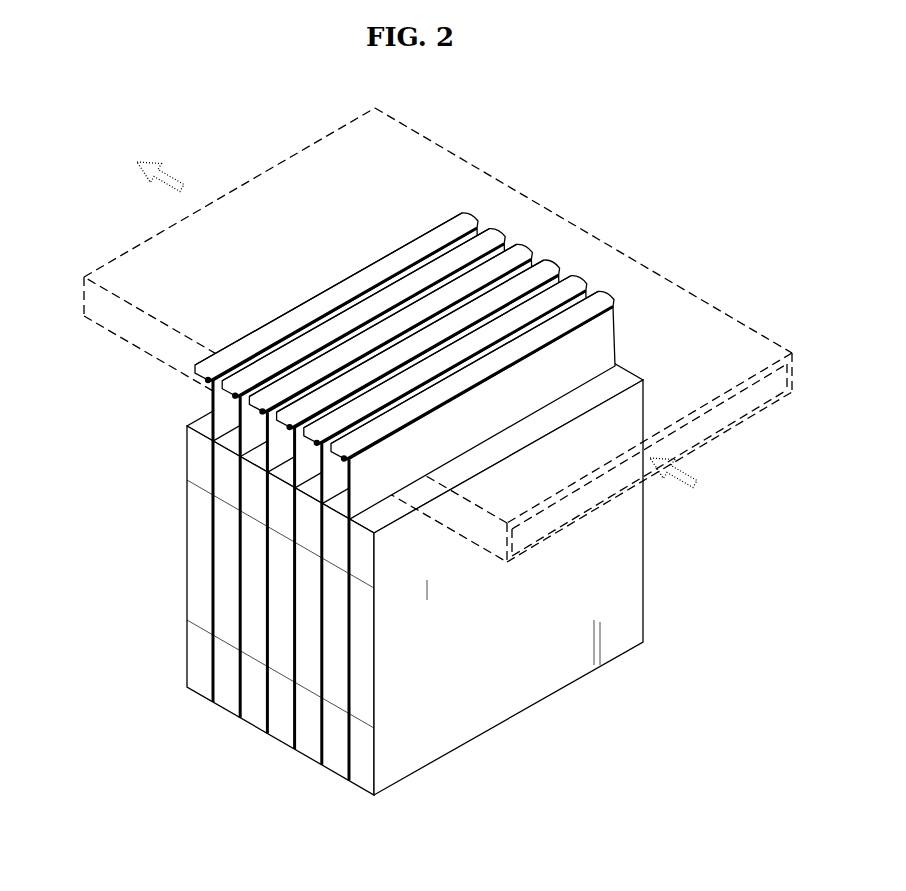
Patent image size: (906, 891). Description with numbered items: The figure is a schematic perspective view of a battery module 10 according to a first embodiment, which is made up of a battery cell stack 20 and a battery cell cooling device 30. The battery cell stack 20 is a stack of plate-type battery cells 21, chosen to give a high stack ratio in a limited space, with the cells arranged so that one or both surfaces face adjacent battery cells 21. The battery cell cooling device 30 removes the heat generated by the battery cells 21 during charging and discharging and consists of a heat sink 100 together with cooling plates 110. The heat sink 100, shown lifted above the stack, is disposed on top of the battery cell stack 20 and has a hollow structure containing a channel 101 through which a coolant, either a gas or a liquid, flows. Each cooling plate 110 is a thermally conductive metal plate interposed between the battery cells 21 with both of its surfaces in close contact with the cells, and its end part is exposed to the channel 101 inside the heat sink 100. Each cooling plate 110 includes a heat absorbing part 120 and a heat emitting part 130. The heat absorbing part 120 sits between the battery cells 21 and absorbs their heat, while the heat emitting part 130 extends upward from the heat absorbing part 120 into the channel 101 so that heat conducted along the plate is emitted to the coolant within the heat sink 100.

The battery module 10 is at (406, 449).
The battery cell stack 20 is at (373, 533).
The battery cell 21 is at (194, 519).
The battery cell cooling device 30 is at (406, 444).
The heat sink 100 is at (428, 335).
The channel 101 is at (768, 413).
The cooling plate 110 is at (339, 497).
The heat absorbing part 120 is at (213, 472).
The heat emitting part 130 is at (197, 375).